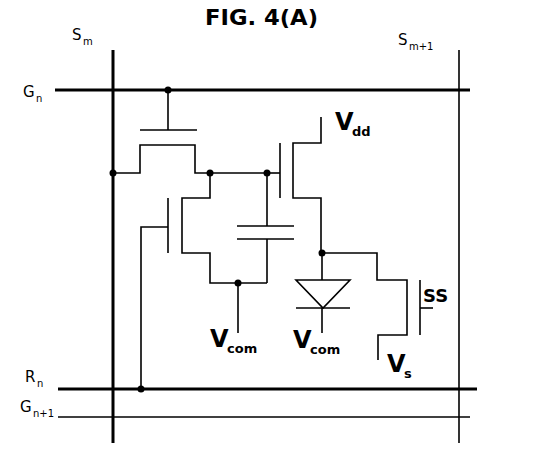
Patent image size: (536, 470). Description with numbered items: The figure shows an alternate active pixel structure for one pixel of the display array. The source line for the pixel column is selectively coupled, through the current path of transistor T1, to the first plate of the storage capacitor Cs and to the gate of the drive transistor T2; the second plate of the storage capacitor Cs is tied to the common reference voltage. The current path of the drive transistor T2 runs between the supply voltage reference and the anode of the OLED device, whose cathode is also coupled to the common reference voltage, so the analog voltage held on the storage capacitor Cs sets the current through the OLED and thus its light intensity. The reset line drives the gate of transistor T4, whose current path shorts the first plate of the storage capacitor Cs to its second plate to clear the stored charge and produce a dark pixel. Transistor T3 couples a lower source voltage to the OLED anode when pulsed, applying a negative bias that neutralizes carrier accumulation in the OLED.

The transistor T1 is at (190, 131).
The drive transistor T2 is at (294, 185).
The transistor T3 is at (377, 306).
The transistor T4 is at (204, 281).
The storage capacitor Cs is at (265, 228).
The organic light emitting diode device OLED is at (300, 293).